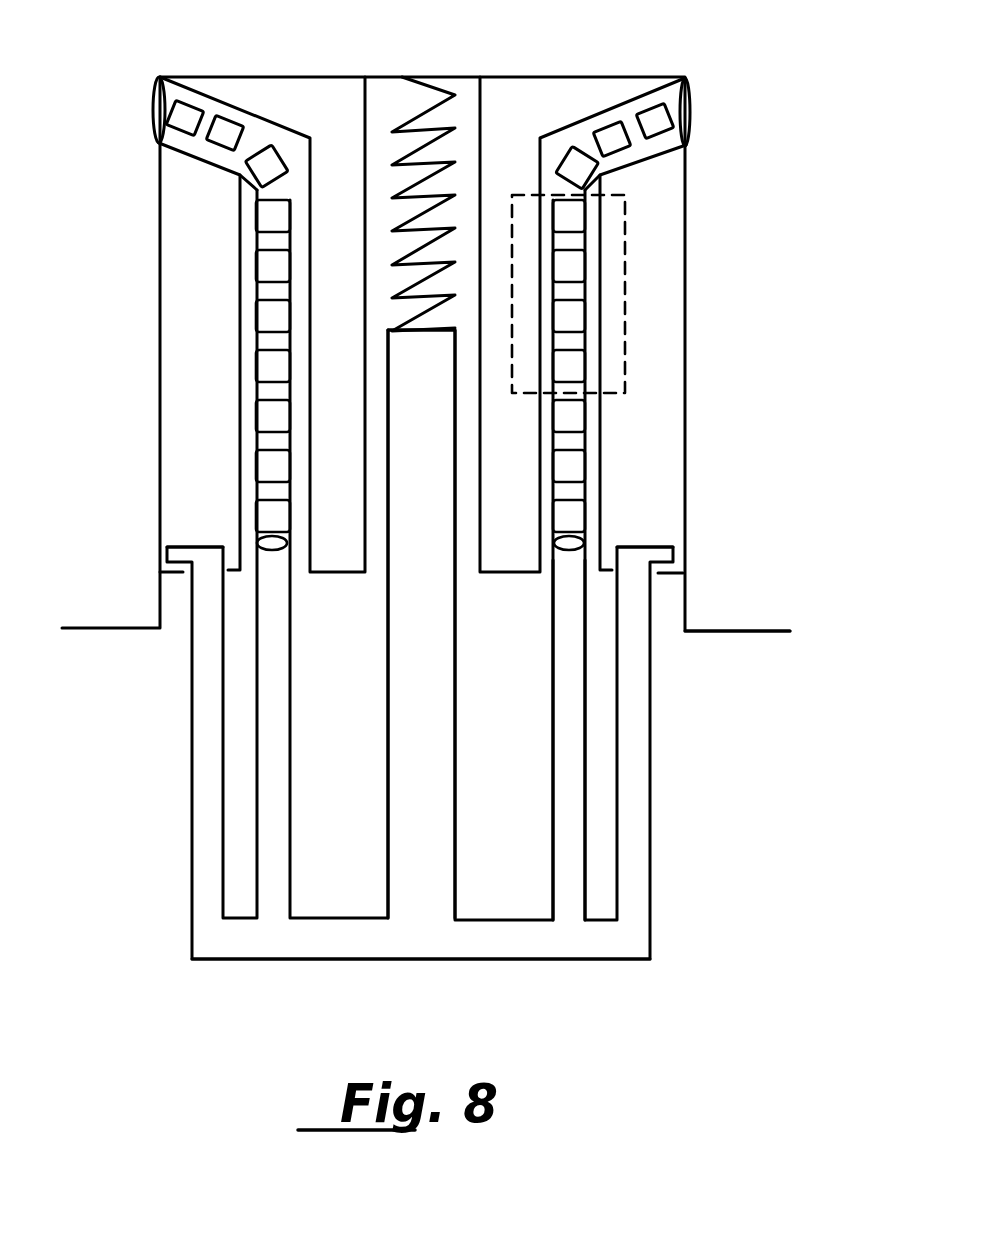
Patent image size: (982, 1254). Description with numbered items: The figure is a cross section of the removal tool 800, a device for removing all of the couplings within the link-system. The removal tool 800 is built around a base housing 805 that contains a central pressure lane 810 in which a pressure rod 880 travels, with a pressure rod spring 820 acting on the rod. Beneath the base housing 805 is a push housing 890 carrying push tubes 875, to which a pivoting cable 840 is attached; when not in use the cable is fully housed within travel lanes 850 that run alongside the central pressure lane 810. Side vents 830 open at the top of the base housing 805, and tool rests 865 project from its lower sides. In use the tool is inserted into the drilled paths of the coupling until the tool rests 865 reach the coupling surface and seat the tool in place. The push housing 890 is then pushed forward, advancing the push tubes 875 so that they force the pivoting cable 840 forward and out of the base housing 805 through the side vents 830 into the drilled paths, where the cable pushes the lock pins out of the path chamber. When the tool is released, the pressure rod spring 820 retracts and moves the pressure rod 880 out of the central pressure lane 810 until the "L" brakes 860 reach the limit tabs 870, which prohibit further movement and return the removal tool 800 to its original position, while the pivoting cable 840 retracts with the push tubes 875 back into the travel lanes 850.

The removal tool 800 is at (186, 40).
The base housing 805 is at (155, 356).
The central pressure lane 810 is at (362, 136).
The pressure rod spring 820 is at (458, 112).
The side vents 830 is at (695, 118).
The pivoting cable 840 is at (629, 284).
The travel lanes 850 is at (607, 431).
The "L" brakes 860 is at (658, 542).
The tool rests 865 is at (748, 626).
The limit tabs 870 is at (670, 582).
The push tubes 875 is at (549, 689).
The pressure rod 880 is at (459, 734).
The push housing 890 is at (430, 962).